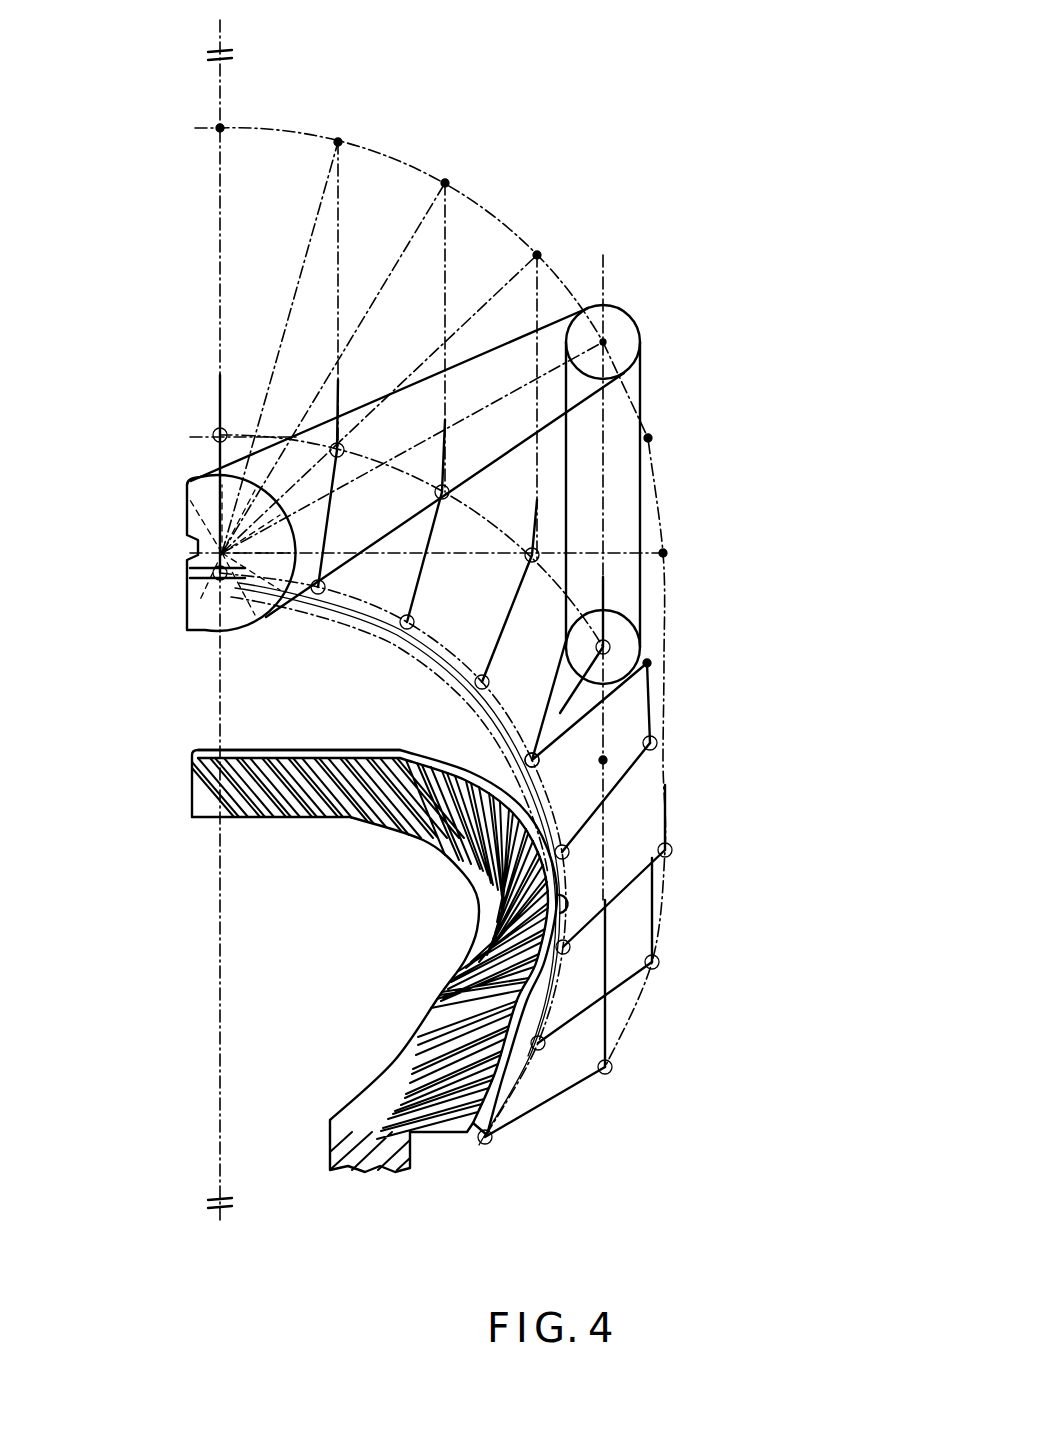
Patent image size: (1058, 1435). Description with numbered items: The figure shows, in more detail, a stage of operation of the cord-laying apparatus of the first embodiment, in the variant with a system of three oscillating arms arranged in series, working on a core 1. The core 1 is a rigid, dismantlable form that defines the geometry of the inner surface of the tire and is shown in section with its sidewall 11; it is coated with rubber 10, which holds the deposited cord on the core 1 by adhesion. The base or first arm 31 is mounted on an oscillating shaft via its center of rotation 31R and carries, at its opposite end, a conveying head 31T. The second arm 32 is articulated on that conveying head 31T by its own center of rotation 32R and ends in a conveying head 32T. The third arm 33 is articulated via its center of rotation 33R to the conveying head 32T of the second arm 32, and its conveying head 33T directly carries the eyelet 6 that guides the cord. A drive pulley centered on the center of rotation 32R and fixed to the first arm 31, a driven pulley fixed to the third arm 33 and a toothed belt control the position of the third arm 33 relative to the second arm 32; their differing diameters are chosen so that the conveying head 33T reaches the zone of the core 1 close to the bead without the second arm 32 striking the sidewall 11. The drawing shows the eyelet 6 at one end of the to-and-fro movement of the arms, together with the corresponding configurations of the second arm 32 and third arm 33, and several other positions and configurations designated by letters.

The core 1 is at (353, 798).
The eyelet 6 is at (524, 757).
The rubber 10 is at (283, 745).
The sidewall 11 is at (556, 903).
The first arm 31 is at (505, 342).
The center of rotation of the first arm 31R is at (212, 548).
The conveying head of the first arm 31T is at (647, 313).
The second arm 32 is at (652, 437).
The center of rotation of the second arm 32R is at (622, 338).
The conveying head of the second arm 32T is at (652, 637).
The third arm 33 is at (590, 710).
The center of rotation of the third arm 33R is at (652, 665).
The conveying head of the third arm 33T is at (521, 772).